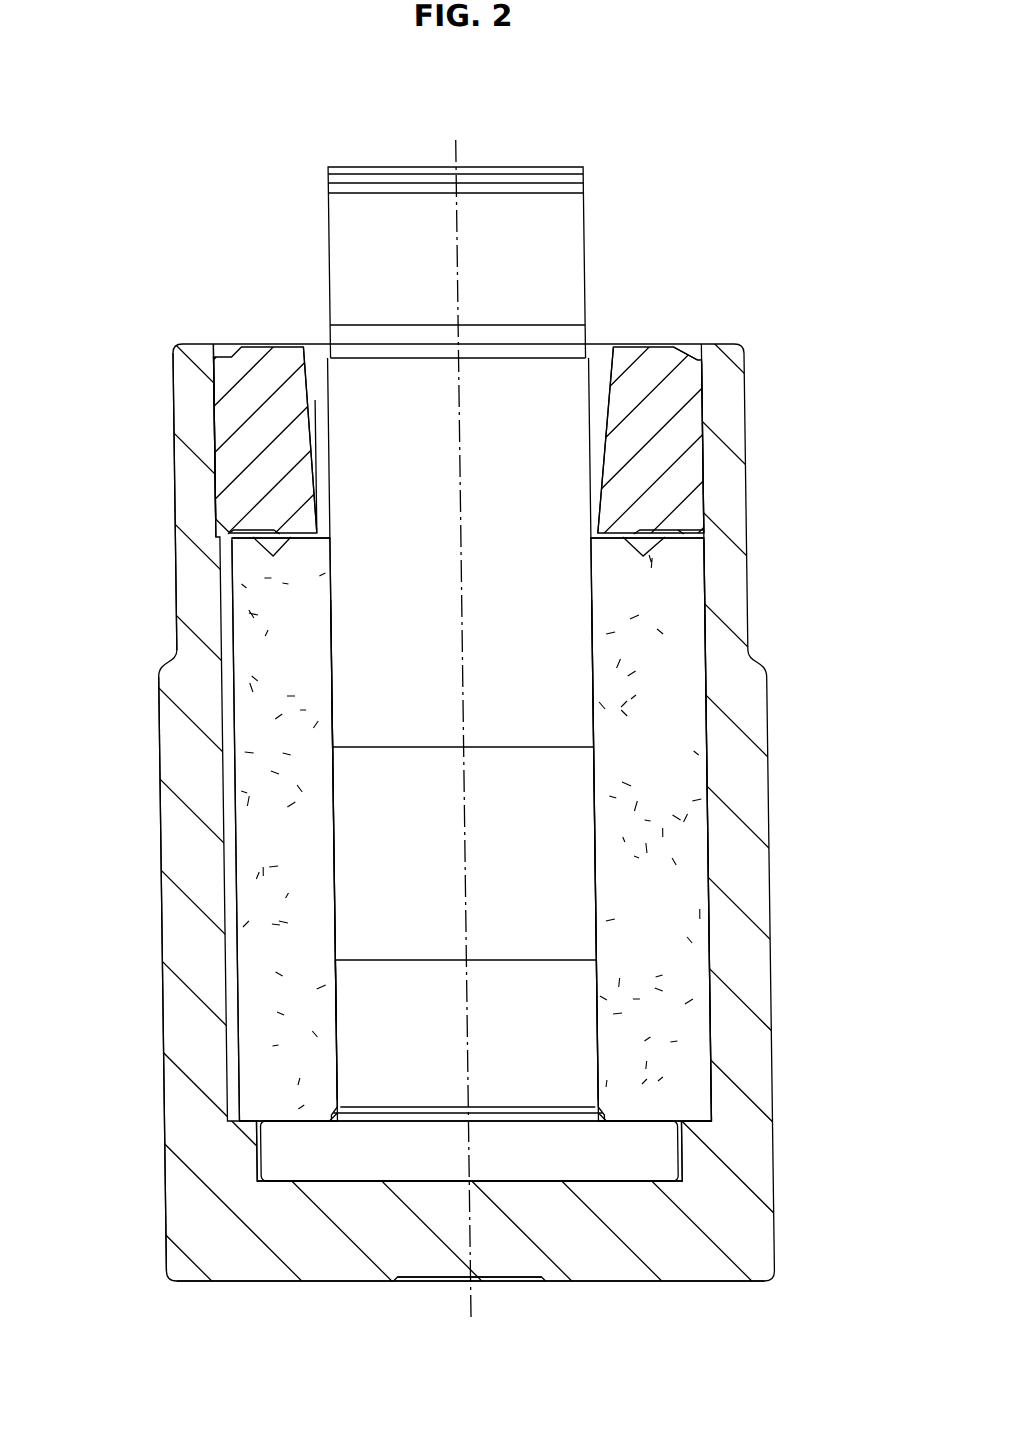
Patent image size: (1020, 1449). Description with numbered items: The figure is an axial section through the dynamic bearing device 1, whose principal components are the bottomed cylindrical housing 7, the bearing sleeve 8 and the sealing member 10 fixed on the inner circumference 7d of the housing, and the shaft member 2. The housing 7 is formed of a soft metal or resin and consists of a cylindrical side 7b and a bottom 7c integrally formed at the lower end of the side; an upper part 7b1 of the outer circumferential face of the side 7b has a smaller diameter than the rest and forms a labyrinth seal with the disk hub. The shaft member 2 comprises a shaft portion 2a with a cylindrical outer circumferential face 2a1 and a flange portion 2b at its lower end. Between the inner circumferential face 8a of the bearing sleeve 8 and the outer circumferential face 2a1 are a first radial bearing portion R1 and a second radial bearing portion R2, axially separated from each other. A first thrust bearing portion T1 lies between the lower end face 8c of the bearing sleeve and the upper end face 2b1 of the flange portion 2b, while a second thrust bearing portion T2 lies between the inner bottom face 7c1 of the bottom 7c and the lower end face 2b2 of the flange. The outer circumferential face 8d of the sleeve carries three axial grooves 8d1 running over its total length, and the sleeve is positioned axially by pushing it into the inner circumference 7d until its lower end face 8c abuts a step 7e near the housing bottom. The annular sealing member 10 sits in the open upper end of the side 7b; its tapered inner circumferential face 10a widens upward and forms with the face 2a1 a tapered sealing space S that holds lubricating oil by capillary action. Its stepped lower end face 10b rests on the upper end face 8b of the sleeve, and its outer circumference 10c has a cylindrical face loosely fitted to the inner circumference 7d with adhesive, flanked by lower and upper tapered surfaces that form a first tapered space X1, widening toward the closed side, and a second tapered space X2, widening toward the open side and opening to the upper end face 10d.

The dynamic bearing device 1 is at (723, 300).
The shaft member 2 is at (531, 156).
The shaft portion 2a is at (554, 648).
The outer circumferential face of the shaft portion 2a1 is at (593, 597).
The flange portion 2b is at (654, 1162).
The upper end face of the flange portion 2b1 is at (618, 1118).
The lower end face of the flange portion 2b2 is at (645, 1183).
The housing 7 is at (778, 748).
The side of the housing 7b is at (159, 840).
The upper part of the outer circumferential face of the side 7b1 is at (178, 456).
The bottom of the housing 7c is at (603, 1255).
The inner bottom face of the housing 7c1 is at (350, 1166).
The inner circumference of the housing 7d is at (219, 390).
The step of the housing 7e is at (685, 1110).
The bearing sleeve 8 is at (677, 903).
The inner circumferential face of the bearing sleeve 8a is at (593, 812).
The upper end face of the bearing sleeve 8b is at (679, 530).
The lower end face of the bearing sleeve 8c is at (643, 1122).
The outer circumferential face of the bearing sleeve 8d is at (706, 943).
The axial groove 8d1 is at (233, 918).
The sealing member 10 is at (667, 332).
The inner circumferential face of the sealing member 10a is at (607, 400).
The lower end face of the sealing member 10b is at (303, 547).
The outer circumference of the sealing member 10c is at (709, 410).
The upper end face of the sealing member 10d is at (221, 413).
The sealing space S is at (326, 403).
The first tapered space X1 is at (699, 534).
The second tapered space X2 is at (699, 360).
The first radial bearing portion R1 is at (332, 705).
The second radial bearing portion R2 is at (332, 1022).
The first thrust bearing portion T1 is at (285, 1118).
The second thrust bearing portion T2 is at (279, 1186).